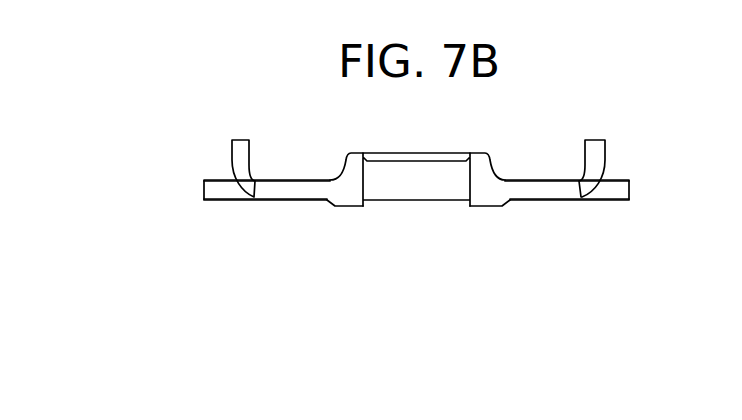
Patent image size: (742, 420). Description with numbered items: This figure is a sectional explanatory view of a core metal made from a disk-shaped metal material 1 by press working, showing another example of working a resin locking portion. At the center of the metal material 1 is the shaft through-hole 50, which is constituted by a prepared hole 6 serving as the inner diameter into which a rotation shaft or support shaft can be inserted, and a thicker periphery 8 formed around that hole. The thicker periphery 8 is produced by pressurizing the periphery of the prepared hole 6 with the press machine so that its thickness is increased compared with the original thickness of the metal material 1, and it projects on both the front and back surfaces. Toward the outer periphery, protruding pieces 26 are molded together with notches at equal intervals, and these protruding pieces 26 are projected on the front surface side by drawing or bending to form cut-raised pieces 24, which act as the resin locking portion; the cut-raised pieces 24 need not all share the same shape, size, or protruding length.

The metal material 1 is at (532, 200).
The prepared hole 6 is at (416, 203).
The thicker periphery 8 is at (353, 192).
The cut-raised pieces 24 is at (244, 152).
The protruding pieces 26 is at (616, 223).
The shaft through-hole 50 is at (418, 223).